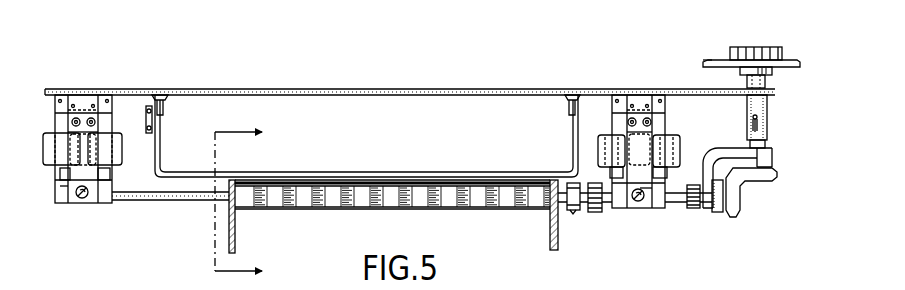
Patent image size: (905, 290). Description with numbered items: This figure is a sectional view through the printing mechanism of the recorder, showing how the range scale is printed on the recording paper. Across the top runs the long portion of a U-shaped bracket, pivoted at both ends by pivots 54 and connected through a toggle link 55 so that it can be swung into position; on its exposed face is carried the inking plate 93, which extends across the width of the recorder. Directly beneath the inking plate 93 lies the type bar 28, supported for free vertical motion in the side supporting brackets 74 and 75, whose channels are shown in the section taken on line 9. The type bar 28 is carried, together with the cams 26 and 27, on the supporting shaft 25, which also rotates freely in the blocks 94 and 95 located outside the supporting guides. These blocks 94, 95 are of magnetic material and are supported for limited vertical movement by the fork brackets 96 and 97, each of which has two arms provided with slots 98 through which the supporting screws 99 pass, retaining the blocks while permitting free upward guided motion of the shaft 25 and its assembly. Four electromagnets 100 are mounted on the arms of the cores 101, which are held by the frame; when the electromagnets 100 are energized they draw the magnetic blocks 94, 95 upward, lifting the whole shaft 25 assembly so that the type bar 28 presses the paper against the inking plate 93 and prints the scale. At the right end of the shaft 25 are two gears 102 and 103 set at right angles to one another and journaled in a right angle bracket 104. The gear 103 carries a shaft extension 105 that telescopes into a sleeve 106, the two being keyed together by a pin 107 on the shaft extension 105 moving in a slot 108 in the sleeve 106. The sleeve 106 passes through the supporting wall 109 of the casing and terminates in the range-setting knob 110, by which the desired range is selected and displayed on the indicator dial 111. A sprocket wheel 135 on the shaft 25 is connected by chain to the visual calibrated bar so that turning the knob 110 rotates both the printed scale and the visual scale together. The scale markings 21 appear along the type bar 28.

The section line 9- 9 is at (248, 202).
The scale 21 is at (392, 215).
The supporting shaft 25 is at (168, 202).
The cam 26 is at (594, 212).
The cam 27 is at (569, 212).
The type bar 28 is at (293, 213).
The pivot 54 is at (163, 111).
The toggle link 55 is at (150, 124).
The side supporting bracket 74 is at (550, 234).
The side supporting bracket 75 is at (236, 236).
The inking plate 93 is at (508, 176).
The magnetic block 94 is at (668, 208).
The magnetic block 95 is at (65, 205).
The fork bracket 96 is at (643, 133).
The fork bracket 97 is at (78, 133).
The slot 98 is at (75, 187).
The supporting screw 99 is at (85, 197).
The electromagnet 100 is at (47, 165).
The core 101 is at (107, 121).
The gear 102 is at (735, 195).
The gear 103 is at (752, 178).
The right angle bracket 104 is at (748, 138).
The shaft extension 105 is at (765, 144).
The sleeve 106 is at (767, 112).
The pin 107 is at (755, 117).
The slot 108 is at (758, 127).
The supporting wall 109 is at (684, 88).
The range-setting knob 110 is at (755, 47).
The indicator dial 111 is at (705, 60).
The sprocket wheel 135 is at (695, 212).